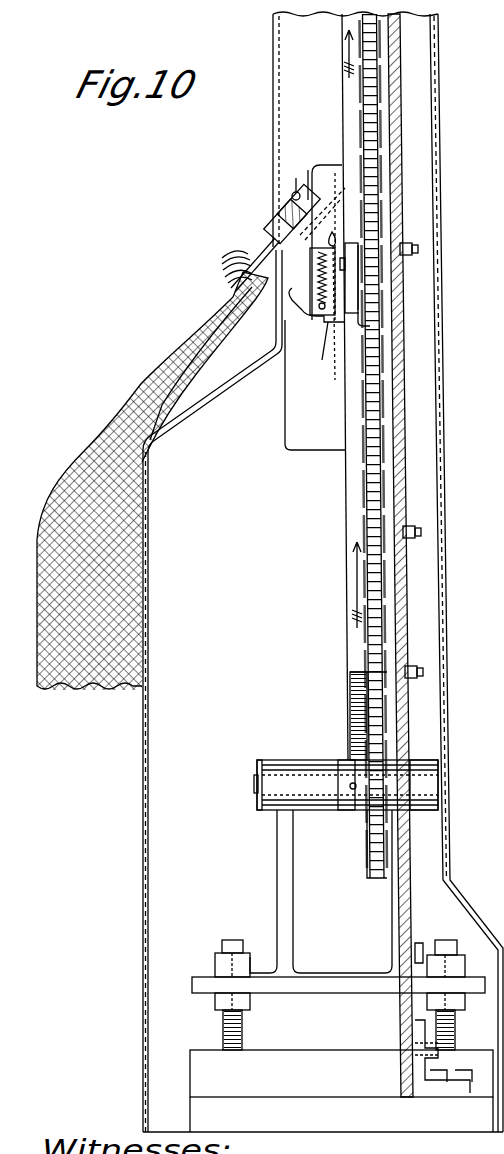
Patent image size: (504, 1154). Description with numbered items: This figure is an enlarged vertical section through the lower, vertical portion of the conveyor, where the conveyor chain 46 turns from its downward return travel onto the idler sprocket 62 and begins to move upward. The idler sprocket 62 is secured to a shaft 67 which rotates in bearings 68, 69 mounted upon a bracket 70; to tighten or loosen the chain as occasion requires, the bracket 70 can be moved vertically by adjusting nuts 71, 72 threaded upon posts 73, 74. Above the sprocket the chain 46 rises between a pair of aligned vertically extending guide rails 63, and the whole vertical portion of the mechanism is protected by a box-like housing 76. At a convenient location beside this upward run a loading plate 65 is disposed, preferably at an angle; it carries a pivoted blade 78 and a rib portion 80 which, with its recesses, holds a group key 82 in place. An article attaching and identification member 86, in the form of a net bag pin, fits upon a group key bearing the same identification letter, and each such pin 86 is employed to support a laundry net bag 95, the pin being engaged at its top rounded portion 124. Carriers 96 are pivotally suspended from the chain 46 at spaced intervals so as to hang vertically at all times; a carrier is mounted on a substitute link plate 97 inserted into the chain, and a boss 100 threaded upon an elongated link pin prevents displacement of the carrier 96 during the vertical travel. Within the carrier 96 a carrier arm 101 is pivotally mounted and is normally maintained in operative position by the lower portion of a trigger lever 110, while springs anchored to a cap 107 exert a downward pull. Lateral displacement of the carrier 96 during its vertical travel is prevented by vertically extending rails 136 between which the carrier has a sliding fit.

The conveyor chain 46 is at (362, 95).
The guide rail 63 is at (366, 138).
The idler sprocket 62 is at (372, 812).
The loading plate 65 is at (292, 186).
The shaft 67 is at (254, 780).
The bearing 68 is at (308, 788).
The bearing 69 is at (423, 778).
The bracket 70 is at (283, 903).
The adjusting nut 71 is at (215, 960).
The adjusting nut 72 is at (458, 964).
The post 73 is at (223, 1030).
The post 74 is at (455, 1032).
The housing 76 is at (446, 452).
The pivoted blade 78 is at (322, 207).
The rib portion 80 is at (285, 200).
The group key 82 is at (249, 268).
The article attaching and identification member 86 is at (259, 238).
The laundry net bag 95 is at (190, 332).
The carrier 96 is at (321, 349).
The substitute link plate 97 is at (358, 268).
The boss 100 is at (362, 328).
The carrier arm 101 is at (304, 318).
The cap 107 is at (308, 300).
The trigger lever 110 is at (337, 300).
The top rounded portion 124 is at (300, 175).
The vertically extending rail 136 is at (350, 498).